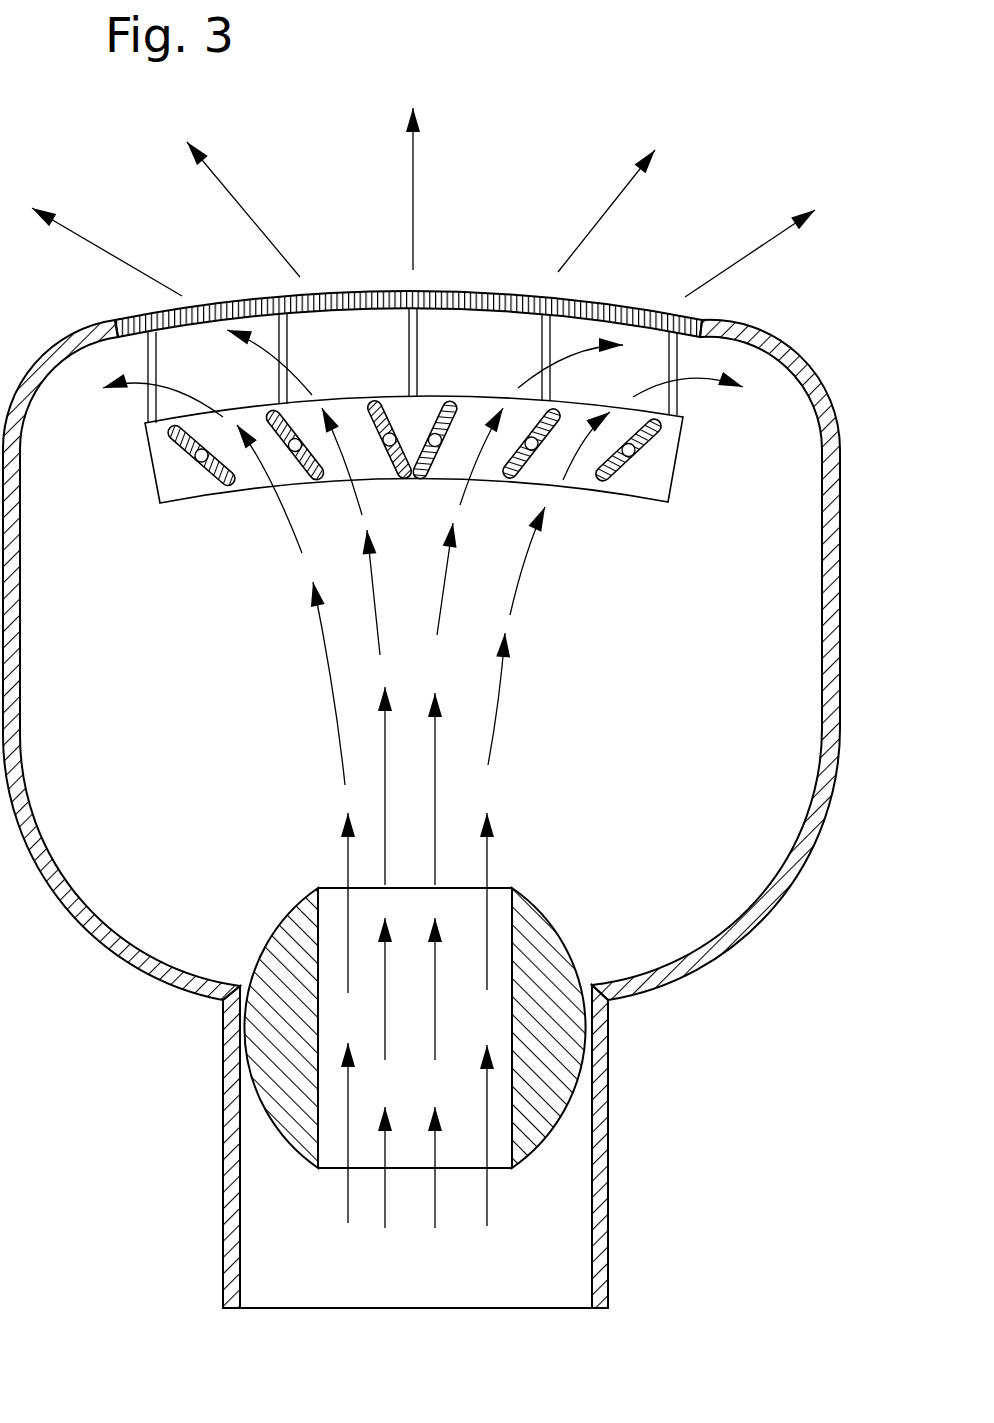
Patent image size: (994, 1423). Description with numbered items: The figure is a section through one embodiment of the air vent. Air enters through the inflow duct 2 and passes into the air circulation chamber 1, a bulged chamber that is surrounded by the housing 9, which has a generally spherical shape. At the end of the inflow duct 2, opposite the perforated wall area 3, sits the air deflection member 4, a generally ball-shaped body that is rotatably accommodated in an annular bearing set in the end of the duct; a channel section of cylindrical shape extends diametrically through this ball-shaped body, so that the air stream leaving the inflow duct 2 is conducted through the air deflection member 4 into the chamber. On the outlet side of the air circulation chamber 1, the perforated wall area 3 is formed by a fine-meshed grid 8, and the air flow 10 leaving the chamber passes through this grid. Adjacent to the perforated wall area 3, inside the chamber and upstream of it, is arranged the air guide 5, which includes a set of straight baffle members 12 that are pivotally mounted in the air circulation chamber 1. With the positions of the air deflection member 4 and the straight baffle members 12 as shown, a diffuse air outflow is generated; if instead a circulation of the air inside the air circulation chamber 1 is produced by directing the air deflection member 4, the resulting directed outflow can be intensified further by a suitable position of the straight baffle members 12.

The air circulation chamber 1 is at (446, 554).
The inflow duct 2 is at (255, 1262).
The perforated wall area 3 is at (494, 300).
The air deflection member 4 is at (556, 945).
The air guide 5 is at (450, 462).
The fine-meshed grid 8 is at (367, 302).
The housing 9 is at (834, 592).
The air flow streams 10 is at (383, 733).
The straight baffle members 12 is at (320, 478).